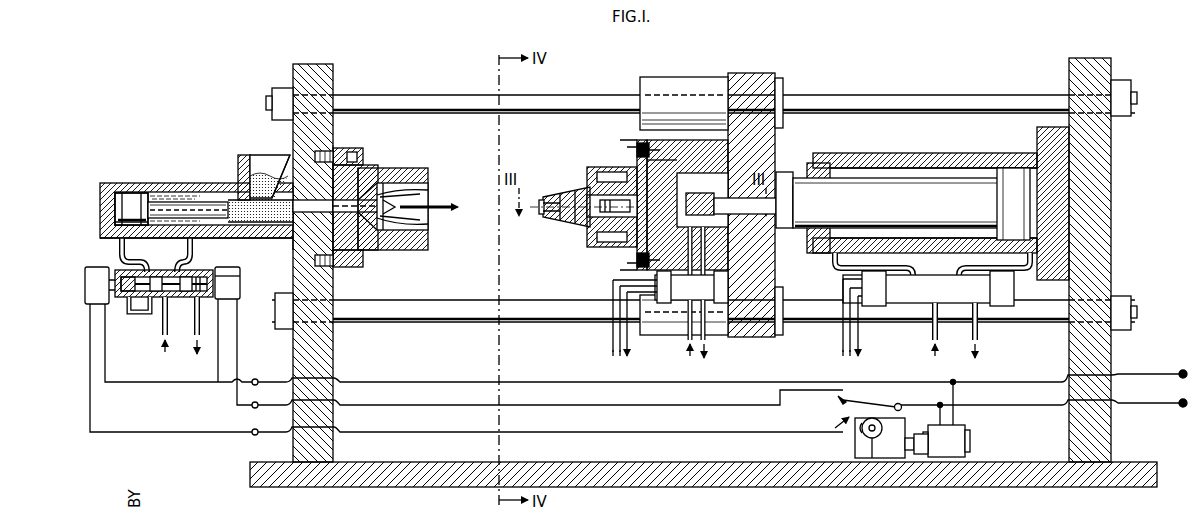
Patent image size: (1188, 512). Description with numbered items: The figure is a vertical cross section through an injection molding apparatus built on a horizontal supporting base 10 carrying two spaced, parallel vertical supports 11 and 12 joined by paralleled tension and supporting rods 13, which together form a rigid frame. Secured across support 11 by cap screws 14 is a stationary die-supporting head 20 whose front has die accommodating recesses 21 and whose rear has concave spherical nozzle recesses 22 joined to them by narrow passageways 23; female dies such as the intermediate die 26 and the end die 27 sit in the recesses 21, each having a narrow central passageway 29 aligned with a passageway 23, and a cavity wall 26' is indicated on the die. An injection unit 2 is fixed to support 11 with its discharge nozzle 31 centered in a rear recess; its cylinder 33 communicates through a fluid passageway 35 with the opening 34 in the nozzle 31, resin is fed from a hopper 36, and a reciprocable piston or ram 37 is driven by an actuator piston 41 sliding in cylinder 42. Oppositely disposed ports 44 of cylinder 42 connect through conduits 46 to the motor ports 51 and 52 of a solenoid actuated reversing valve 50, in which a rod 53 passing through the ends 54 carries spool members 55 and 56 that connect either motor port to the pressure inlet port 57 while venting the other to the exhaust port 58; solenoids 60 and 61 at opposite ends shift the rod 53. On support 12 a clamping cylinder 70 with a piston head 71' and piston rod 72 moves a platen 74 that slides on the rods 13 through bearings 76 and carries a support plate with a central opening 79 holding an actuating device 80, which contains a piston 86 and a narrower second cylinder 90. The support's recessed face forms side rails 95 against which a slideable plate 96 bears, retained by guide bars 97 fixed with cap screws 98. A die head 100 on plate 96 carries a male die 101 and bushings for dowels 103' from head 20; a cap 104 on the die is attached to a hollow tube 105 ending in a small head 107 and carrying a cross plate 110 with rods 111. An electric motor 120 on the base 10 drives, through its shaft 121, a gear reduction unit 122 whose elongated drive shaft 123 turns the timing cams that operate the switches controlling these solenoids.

The injection unit 2 is at (100, 186).
The supporting base 10 is at (1157, 472).
The vertical support 11 is at (318, 66).
The vertical support 12 is at (1111, 184).
The tension and supporting rods 13 is at (458, 96).
The cap screws 14 is at (362, 156).
The stationary die-supporting head 20 is at (425, 168).
The die accommodating recess 21 is at (415, 168).
The nozzle accommodating recess 22 is at (372, 248).
The passageway 23 is at (372, 190).
The intermediate female die 26 is at (418, 216).
The cavity wall 26' is at (423, 192).
The end female die 27 is at (293, 250).
The die passageway 29 is at (392, 250).
The discharge nozzle 31 is at (336, 150).
The cylinder 33 is at (240, 205).
The nozzle opening 34 is at (350, 160).
The fluid passageway 35 is at (293, 162).
The hopper 36 is at (252, 158).
The piston or ram 37 is at (180, 202).
The actuator piston 41 is at (137, 196).
The actuator cylinder 42 is at (184, 202).
The fluid inlet-outlet ports 44 is at (100, 235).
The conduits 46 is at (125, 249).
The solenoid actuated reversing valve 50 is at (128, 300).
The first motor port 51 is at (124, 272).
The second motor port 52 is at (197, 274).
The reciprocable rod 53 is at (145, 312).
The valve ends 54 is at (90, 268).
The spool type valve member 55 is at (160, 276).
The spool type valve member 56 is at (240, 273).
The pressure inlet port 57 is at (168, 322).
The exhaust port 58 is at (196, 340).
The solenoid 60 is at (90, 305).
The solenoid 61 is at (238, 303).
The clamping cylinder 70 is at (921, 153).
The clamping piston 71' is at (1013, 183).
The piston rod 72 is at (946, 180).
The platen 74 is at (755, 76).
The bearings 76 is at (650, 80).
The central opening 79 is at (690, 195).
The actuating device 80 is at (779, 190).
The piston 86 is at (700, 193).
The second cylinder 90 is at (745, 206).
The side rails 95 is at (640, 144).
The slideable supporting plate 96 is at (637, 170).
The retaining guide bars 97 is at (640, 151).
The cap screws 98 is at (637, 152).
The die head 100 is at (637, 162).
The male die 101 is at (547, 216).
The dowels 103' is at (444, 192).
The cap 104 is at (543, 200).
The hollow tube 105 is at (552, 205).
The hollow small head 107 is at (662, 165).
The cross plate 110 is at (600, 249).
The rods 111 is at (590, 180).
The electric motor 120 is at (966, 430).
The drive shaft 121 is at (918, 458).
The gear reduction unit 122 is at (890, 458).
The drive shaft 123 is at (866, 435).